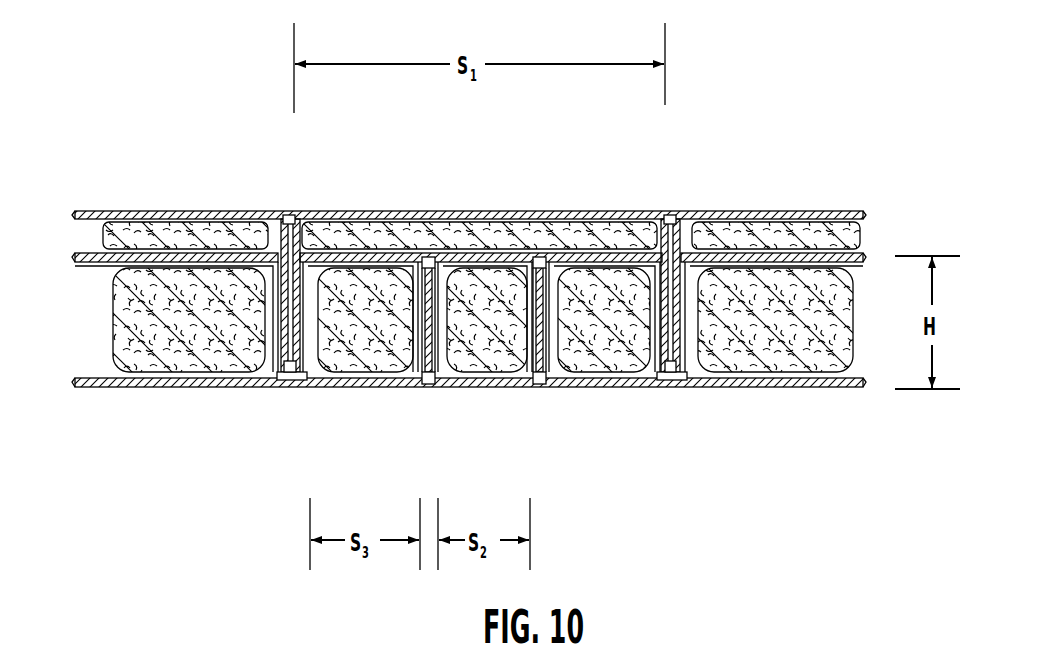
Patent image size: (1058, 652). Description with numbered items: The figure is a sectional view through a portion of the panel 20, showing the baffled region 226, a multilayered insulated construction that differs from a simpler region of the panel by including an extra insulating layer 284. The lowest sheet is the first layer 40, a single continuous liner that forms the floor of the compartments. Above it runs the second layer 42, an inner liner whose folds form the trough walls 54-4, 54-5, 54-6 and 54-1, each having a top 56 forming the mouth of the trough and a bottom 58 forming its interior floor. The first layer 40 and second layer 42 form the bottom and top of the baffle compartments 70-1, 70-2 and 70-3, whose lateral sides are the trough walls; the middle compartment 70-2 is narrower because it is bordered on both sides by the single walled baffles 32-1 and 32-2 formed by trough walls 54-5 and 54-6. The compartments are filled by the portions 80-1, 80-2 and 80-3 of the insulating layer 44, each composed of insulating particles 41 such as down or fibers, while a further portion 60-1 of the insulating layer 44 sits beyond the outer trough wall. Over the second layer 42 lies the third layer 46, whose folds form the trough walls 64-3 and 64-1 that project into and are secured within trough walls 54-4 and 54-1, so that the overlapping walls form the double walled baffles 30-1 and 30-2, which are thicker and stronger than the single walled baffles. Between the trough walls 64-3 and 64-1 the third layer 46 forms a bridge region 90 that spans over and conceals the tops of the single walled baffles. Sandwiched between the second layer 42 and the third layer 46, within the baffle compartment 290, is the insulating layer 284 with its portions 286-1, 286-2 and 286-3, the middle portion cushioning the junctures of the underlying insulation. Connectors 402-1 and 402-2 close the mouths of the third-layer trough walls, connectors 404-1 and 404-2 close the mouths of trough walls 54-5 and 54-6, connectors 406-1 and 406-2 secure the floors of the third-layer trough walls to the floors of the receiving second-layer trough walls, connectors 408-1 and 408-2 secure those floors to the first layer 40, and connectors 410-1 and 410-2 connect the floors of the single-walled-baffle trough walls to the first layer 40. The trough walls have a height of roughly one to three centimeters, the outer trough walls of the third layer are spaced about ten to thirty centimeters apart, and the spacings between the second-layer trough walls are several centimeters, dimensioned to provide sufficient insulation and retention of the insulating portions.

The panel 20 is at (114, 104).
The baffled region 226 is at (99, 166).
The portion of insulating layer 286-1 is at (147, 224).
The portion of insulating layer 286-2 is at (442, 222).
The portion of insulating layer 286-3 is at (825, 226).
The trough wall 54-4 is at (273, 243).
The trough wall 54-5 is at (440, 287).
The trough wall 54-6 is at (623, 285).
The trough wall 54-1 is at (692, 283).
The top 56 is at (283, 255).
The connector 402-1 is at (296, 213).
The connector 402-2 is at (675, 213).
The trough wall 64-3 is at (303, 243).
The trough wall 64-1 is at (683, 353).
The bridge region 90 is at (392, 211).
The connector 404-1 is at (427, 257).
The connector 404-2 is at (540, 258).
The insulating particles 41 is at (482, 297).
The portion of insulating layer 80-1 is at (393, 345).
The portion of insulating layer 80-2 is at (498, 290).
The portion of insulating layer 80-3 is at (627, 286).
The baffle compartment 290 is at (553, 232).
The third layer 46 is at (793, 211).
The insulating layer 284 is at (861, 228).
The second layer 42 is at (848, 250).
The insulating layer 44 is at (863, 318).
The portion of insulating layer 60-1 is at (855, 347).
The first layer 40 is at (162, 383).
The bottom 58 is at (272, 373).
The connector 406-1 is at (288, 370).
The connector 406-2 is at (668, 370).
The connector 408-1 is at (293, 381).
The connector 408-2 is at (673, 380).
The double walled baffle 30-1 is at (318, 378).
The double walled baffle 30-2 is at (694, 376).
The single walled baffle 32-1 is at (458, 373).
The single walled baffle 32-2 is at (547, 390).
The baffle compartment 70-1 is at (424, 381).
The baffle compartment 70-2 is at (539, 384).
The baffle compartment 70-3 is at (603, 375).
The connector 410-1 is at (430, 384).
The connector 410-2 is at (560, 384).